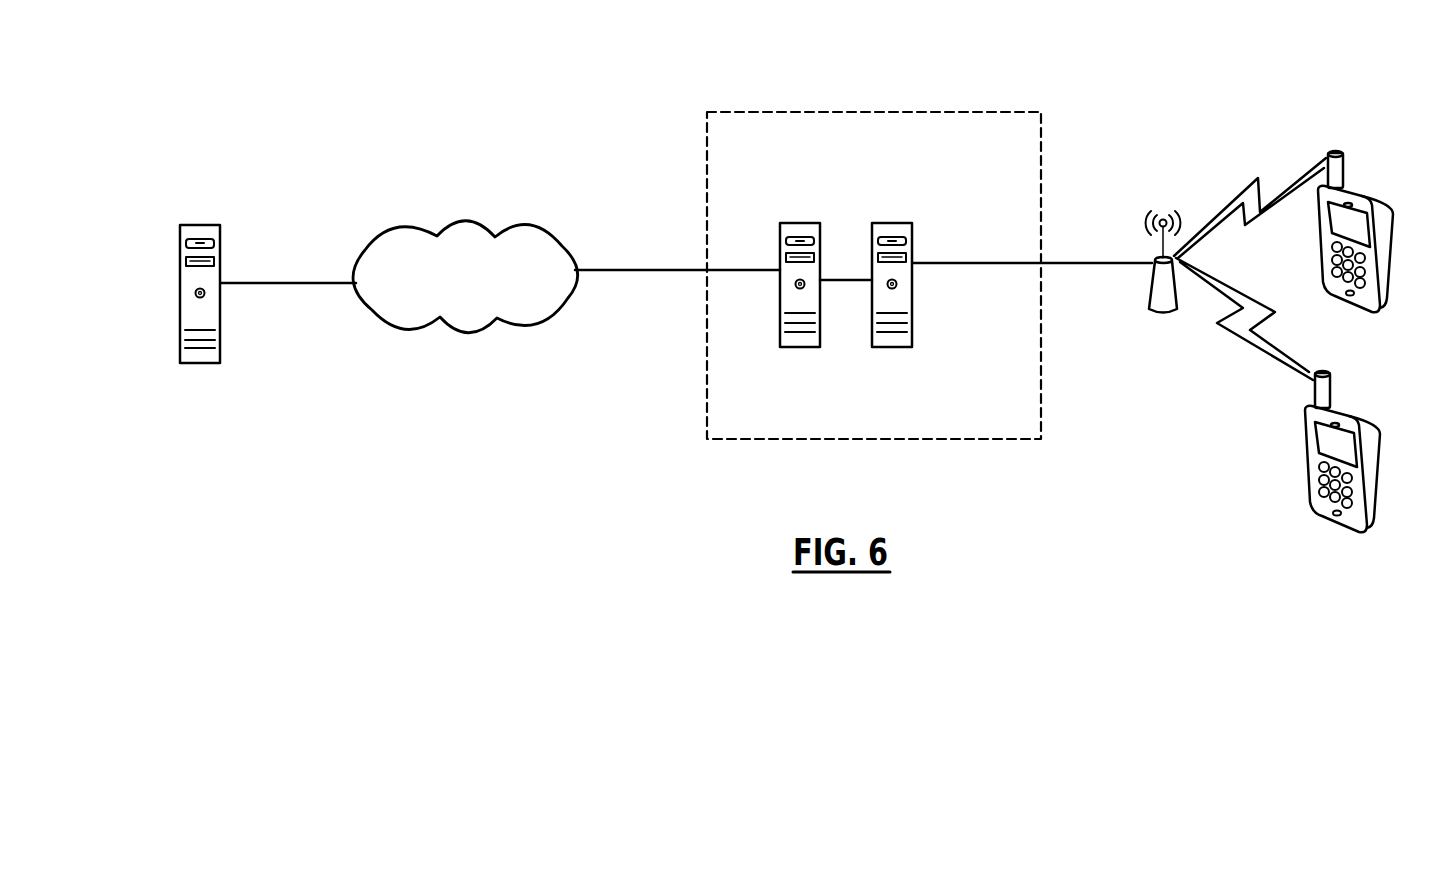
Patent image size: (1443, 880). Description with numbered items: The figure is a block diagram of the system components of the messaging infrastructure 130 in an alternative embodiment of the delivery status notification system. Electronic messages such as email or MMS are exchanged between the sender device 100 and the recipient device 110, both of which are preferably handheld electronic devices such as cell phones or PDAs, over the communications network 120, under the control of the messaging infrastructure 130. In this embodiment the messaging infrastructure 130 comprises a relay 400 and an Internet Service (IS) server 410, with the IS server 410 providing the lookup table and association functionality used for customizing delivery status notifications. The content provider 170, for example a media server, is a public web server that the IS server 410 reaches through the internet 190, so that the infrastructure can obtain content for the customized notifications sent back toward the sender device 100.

The sender device 100 is at (1370, 197).
The recipient device 110 is at (1365, 413).
The communications network 120 is at (1157, 212).
The messaging infrastructure 130 is at (858, 111).
The content provider 170 is at (195, 232).
The internet 190 is at (454, 225).
The relay 400 is at (913, 228).
The Internet Service (IS) server 410 is at (780, 323).